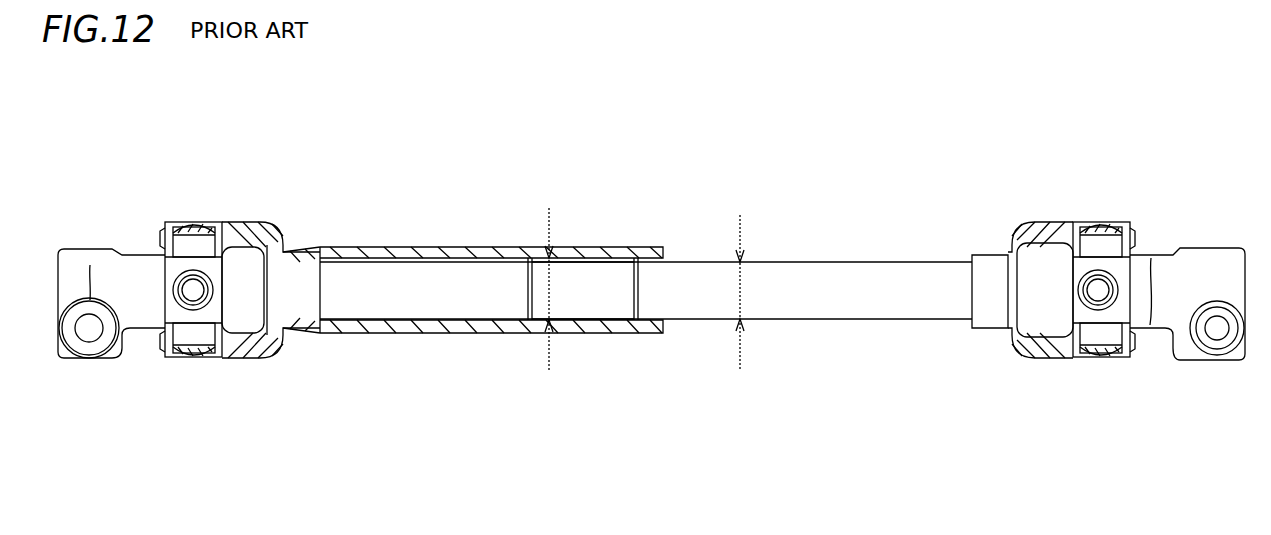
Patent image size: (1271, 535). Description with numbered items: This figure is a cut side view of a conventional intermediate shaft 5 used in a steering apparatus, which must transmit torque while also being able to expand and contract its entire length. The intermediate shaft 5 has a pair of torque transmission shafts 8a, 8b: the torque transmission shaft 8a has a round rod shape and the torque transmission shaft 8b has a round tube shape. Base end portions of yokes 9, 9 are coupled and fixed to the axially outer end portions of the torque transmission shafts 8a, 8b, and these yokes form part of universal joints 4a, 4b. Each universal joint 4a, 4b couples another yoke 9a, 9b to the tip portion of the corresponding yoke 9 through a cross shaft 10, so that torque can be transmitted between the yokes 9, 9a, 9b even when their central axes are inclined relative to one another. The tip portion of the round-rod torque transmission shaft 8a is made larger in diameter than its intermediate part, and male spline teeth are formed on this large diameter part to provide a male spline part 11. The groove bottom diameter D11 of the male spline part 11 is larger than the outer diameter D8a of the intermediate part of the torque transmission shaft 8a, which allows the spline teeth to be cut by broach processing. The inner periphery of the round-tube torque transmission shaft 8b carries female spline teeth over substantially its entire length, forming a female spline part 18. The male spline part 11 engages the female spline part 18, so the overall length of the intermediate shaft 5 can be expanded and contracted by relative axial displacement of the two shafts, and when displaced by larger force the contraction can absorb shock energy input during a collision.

The intermediate shaft 5 is at (680, 226).
The universal joint 4a is at (1110, 210).
The universal joint 4b is at (213, 205).
The torque transmission shaft 8a is at (838, 303).
The torque transmission shaft 8b is at (448, 328).
The yoke 9 is at (270, 355).
The yoke 9a is at (1197, 270).
The yoke 9b is at (124, 268).
The cross shaft 10 is at (188, 353).
The male spline part 11 is at (570, 278).
The female spline part 18 is at (592, 312).
The groove bottom diameter of the male spline part D11 is at (548, 288).
The outer diameter of the intermediate part of the torque transmission shaft D8a is at (738, 293).